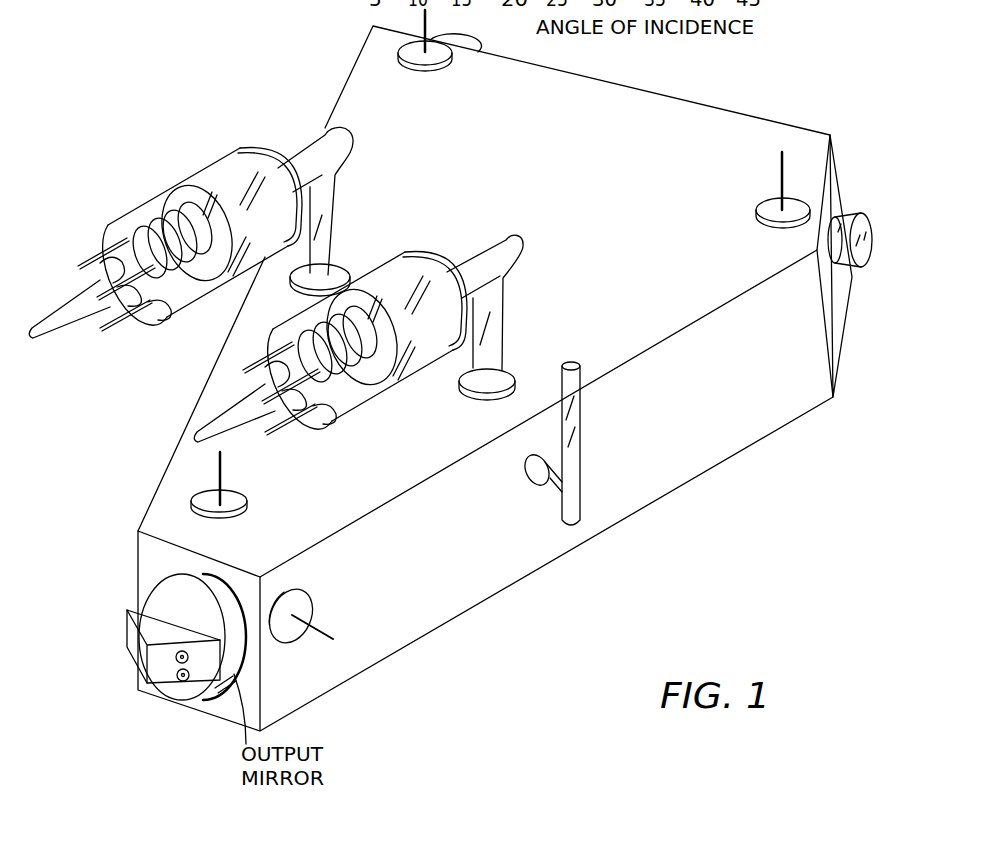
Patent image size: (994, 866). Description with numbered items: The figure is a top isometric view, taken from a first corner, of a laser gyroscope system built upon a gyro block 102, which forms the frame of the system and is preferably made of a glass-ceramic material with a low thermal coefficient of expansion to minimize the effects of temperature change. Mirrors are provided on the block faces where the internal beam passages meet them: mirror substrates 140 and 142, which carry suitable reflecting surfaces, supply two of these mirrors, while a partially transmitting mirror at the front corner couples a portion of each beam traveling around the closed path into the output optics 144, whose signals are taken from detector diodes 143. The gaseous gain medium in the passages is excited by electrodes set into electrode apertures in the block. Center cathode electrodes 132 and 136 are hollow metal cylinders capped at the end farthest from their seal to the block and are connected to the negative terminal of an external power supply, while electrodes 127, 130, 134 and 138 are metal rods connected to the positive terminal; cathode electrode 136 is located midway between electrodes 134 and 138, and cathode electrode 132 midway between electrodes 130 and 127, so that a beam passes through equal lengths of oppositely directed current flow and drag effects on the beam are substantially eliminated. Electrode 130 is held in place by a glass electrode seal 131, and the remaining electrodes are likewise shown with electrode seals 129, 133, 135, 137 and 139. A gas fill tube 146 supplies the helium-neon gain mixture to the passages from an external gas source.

The gyro block 102 is at (346, 670).
The electrode 127 is at (326, 636).
The electrode seal 129 is at (304, 600).
The electrode 130 is at (784, 152).
The electrode seal 131 is at (758, 207).
The cathode electrode 132 is at (445, 248).
The electrode seal 133 is at (508, 370).
The electrode 134 is at (220, 464).
The electrode seal 135 is at (241, 493).
The cathode electrode 136 is at (125, 174).
The electrode seal 137 is at (346, 268).
The electrode 138 is at (418, 13).
The electrode seal 139 is at (400, 54).
The mirror substrate 140 is at (860, 216).
The mirror substrate 142 is at (465, 52).
The detector diodes 143 is at (182, 680).
The output optics 144 is at (118, 608).
The gas fill tube 146 is at (577, 503).